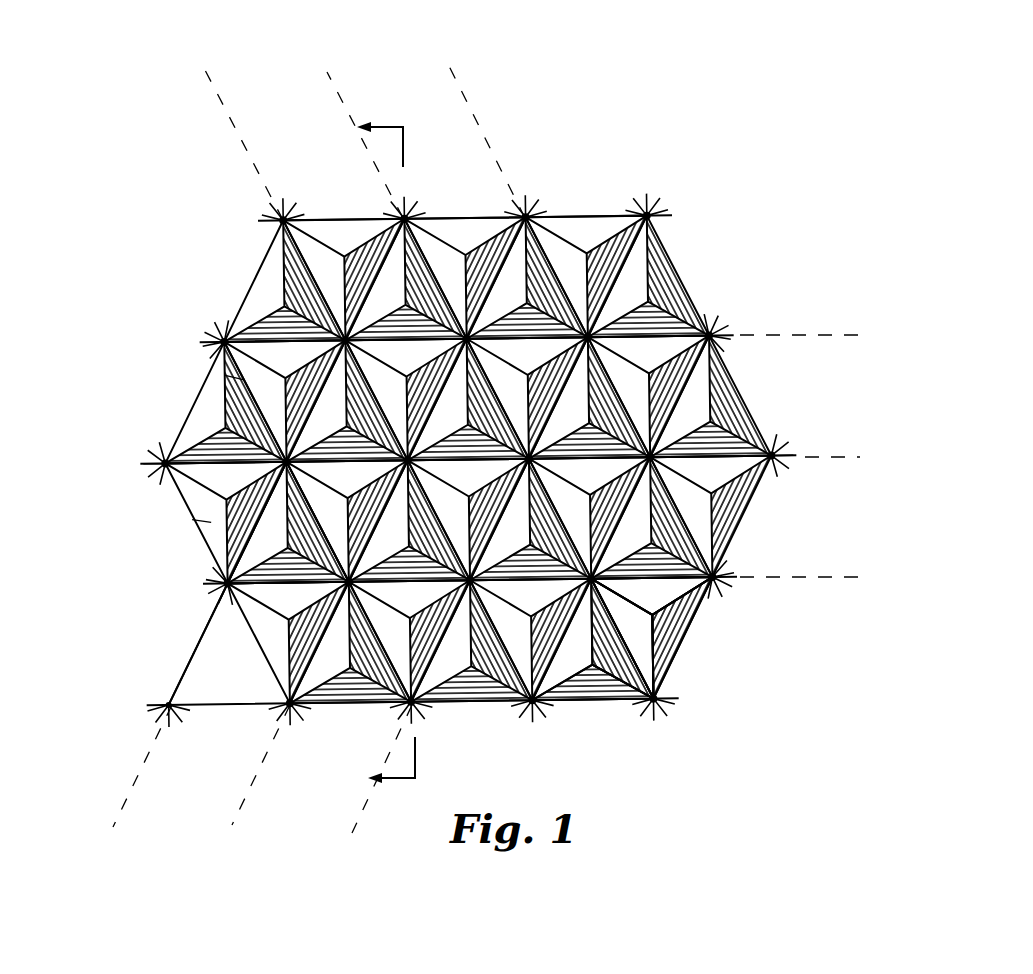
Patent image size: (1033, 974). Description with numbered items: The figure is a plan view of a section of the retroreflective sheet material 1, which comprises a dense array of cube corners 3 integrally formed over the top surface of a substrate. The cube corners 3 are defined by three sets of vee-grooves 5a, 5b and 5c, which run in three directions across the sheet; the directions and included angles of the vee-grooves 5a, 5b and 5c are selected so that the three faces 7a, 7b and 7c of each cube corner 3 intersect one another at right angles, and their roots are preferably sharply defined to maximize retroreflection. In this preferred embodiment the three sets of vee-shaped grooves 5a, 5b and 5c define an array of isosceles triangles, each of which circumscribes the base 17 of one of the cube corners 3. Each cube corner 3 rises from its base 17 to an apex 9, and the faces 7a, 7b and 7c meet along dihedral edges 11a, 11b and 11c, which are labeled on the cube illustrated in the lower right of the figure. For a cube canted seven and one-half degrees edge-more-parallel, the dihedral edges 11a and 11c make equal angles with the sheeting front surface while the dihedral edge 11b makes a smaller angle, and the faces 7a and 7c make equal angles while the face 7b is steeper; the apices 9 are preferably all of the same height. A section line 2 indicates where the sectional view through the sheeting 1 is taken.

The retroreflective sheet material 1 is at (98, 239).
The section line 2 is at (371, 455).
The cube corners 3 is at (268, 544).
The vee-grooves 5a is at (873, 334).
The vee-grooves 5b is at (447, 62).
The vee-grooves 5c is at (352, 833).
The face 7a is at (620, 695).
The face 7b is at (665, 592).
The face 7c is at (645, 640).
The apex 9 is at (572, 688).
The dihedral edge 11a is at (662, 600).
The dihedral edge 11b is at (620, 628).
The dihedral edge 11c is at (632, 597).
The base 17 is at (204, 644).